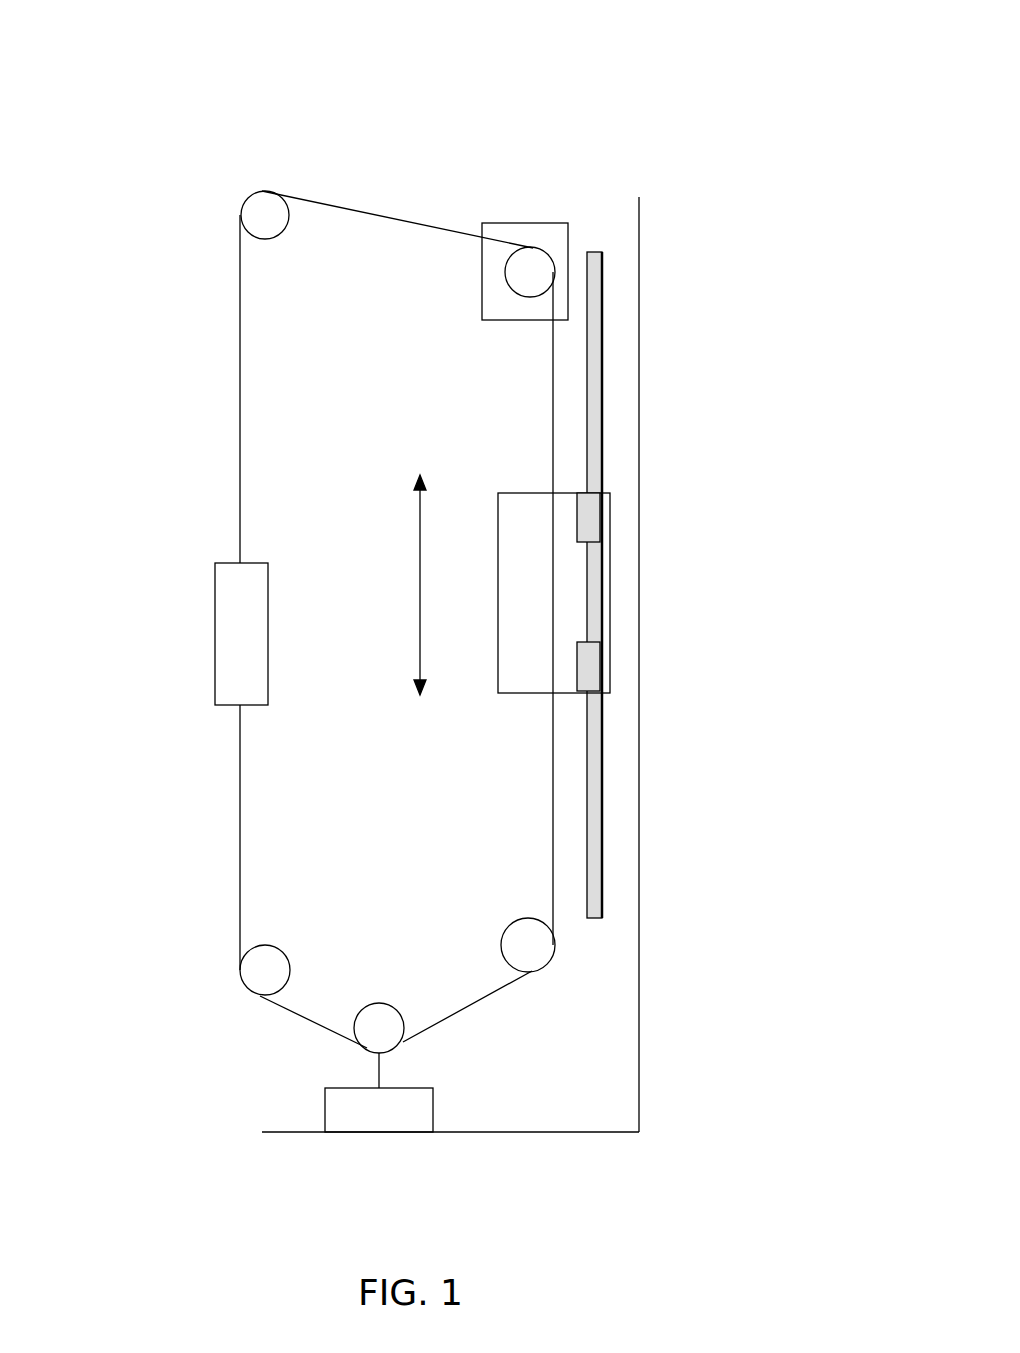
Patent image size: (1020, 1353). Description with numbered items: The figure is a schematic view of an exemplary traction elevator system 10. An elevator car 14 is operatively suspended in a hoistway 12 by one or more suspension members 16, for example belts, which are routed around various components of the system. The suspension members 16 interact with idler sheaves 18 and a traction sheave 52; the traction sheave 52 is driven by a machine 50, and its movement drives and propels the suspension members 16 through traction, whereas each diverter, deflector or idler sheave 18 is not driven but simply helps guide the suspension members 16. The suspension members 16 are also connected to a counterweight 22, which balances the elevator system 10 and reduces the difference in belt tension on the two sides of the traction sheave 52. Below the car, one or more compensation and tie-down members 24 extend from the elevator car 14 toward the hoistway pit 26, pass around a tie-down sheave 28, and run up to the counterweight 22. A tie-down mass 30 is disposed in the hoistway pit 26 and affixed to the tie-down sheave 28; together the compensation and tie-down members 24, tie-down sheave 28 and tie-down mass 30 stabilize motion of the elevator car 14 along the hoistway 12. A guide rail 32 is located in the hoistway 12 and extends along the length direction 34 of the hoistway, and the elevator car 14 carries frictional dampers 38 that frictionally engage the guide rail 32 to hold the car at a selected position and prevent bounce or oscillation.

The traction elevator system 10 is at (198, 76).
The hoistway 12 is at (639, 455).
The elevator car 14 is at (566, 605).
The suspension members 16 is at (553, 408).
The sheave 18 is at (262, 214).
The counterweight 22 is at (240, 633).
The compensation and tie-down members 24 is at (240, 875).
The hoistway pit 26 is at (566, 1083).
The tie-down sheave 28 is at (379, 1003).
The tie-down mass 30 is at (392, 1108).
The guide rail 32 is at (597, 322).
The length direction 34 is at (420, 585).
The frictional dampers 38 is at (590, 520).
The machine 50 is at (545, 223).
The traction sheave 52 is at (517, 275).